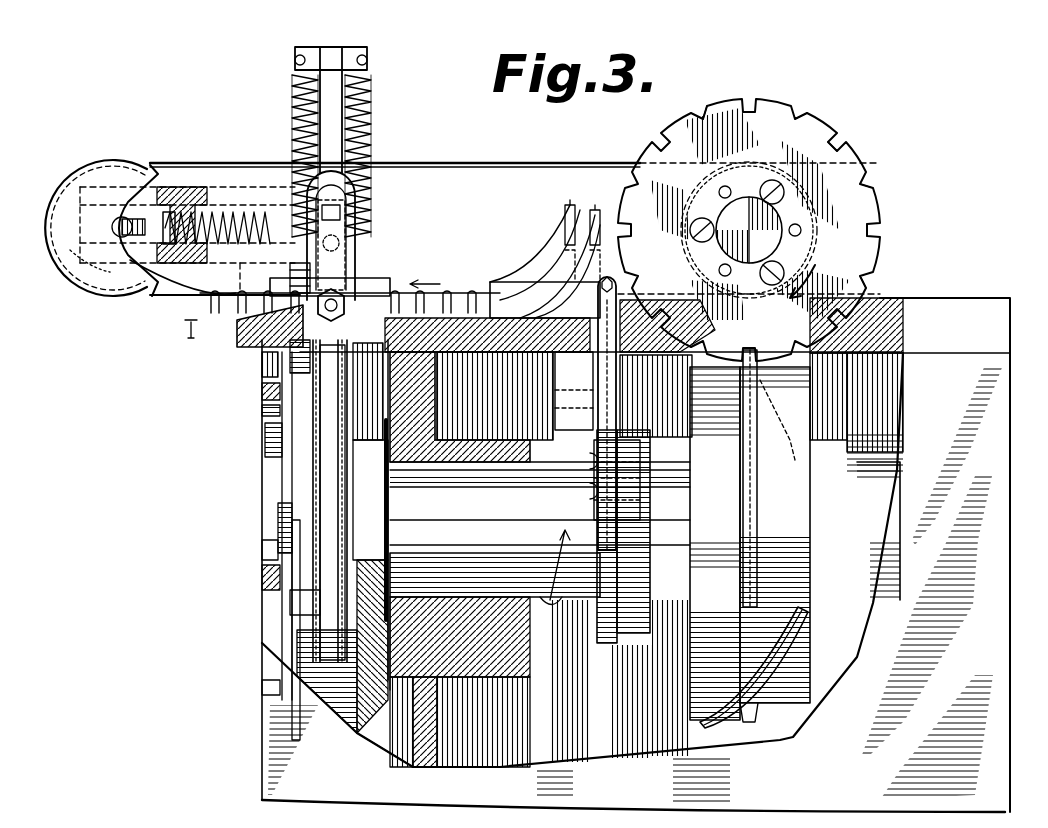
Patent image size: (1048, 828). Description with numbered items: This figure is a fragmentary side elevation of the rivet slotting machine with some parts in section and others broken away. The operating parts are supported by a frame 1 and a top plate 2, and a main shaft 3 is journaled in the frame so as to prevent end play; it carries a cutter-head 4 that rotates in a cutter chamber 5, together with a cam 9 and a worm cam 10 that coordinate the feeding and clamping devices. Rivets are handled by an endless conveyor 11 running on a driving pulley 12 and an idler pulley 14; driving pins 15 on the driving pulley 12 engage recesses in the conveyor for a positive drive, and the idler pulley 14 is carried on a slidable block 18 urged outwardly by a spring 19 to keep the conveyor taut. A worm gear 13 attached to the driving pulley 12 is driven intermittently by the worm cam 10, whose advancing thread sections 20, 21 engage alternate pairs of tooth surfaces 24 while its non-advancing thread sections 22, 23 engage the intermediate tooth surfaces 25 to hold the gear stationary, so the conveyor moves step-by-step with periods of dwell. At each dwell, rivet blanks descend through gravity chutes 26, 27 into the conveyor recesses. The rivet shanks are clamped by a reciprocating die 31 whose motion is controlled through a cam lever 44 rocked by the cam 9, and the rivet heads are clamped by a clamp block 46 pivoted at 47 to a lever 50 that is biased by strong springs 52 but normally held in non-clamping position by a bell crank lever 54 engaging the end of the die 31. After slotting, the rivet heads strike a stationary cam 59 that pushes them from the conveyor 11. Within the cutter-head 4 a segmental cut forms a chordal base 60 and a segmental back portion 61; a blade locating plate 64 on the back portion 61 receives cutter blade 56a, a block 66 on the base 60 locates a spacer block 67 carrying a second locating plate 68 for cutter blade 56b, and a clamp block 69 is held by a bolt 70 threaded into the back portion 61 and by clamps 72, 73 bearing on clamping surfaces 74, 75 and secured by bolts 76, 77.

The frame 1 is at (437, 716).
The top plate 2 is at (1010, 320).
The main shaft 3 is at (875, 516).
The cutter-head 4 is at (396, 652).
The cutter chamber 5 is at (392, 748).
The cam 9 is at (608, 643).
The worm cam 10 is at (795, 410).
The endless conveyor 11 is at (552, 162).
The driving pulley 12 is at (690, 232).
The worm gear 13 is at (749, 230).
The idler pulley 14 is at (115, 170).
The driving pins 15 is at (718, 270).
The slidable block 18 is at (160, 200).
The spring 19 is at (238, 212).
The thread section 20 is at (790, 420).
The thread section 21 is at (800, 640).
The thread section 22 is at (740, 502).
The thread section 23 is at (757, 716).
The tooth surfaces 24 is at (707, 106).
The tooth surfaces 25 is at (755, 99).
The gravity chute 26 is at (560, 248).
The gravity chute 27 is at (607, 278).
The die 31 is at (345, 300).
The cam lever 44 is at (618, 378).
The clamp block 46 is at (290, 272).
The pivot 47 is at (340, 250).
The lever 50 is at (340, 225).
The springs 52 is at (292, 118).
The bell crank lever 54 is at (345, 240).
The cutter blade 56a is at (380, 480).
The cutter blade 56b is at (314, 470).
The stationary cam 59 is at (194, 305).
The chordal base 60 is at (262, 325).
The segmental back portion 61 is at (375, 540).
The blade locating plate 64 is at (372, 565).
The block 66 is at (300, 665).
The spacer block 67 is at (333, 423).
The second locating plate 68 is at (300, 628).
The clamp block 69 is at (295, 530).
The bolt 70 is at (272, 442).
The clamp 72 is at (265, 412).
The clamp 73 is at (285, 552).
The clamping surface 74 is at (280, 362).
The clamping surface 75 is at (285, 513).
The bolt 76 is at (265, 388).
The bolt 77 is at (268, 570).